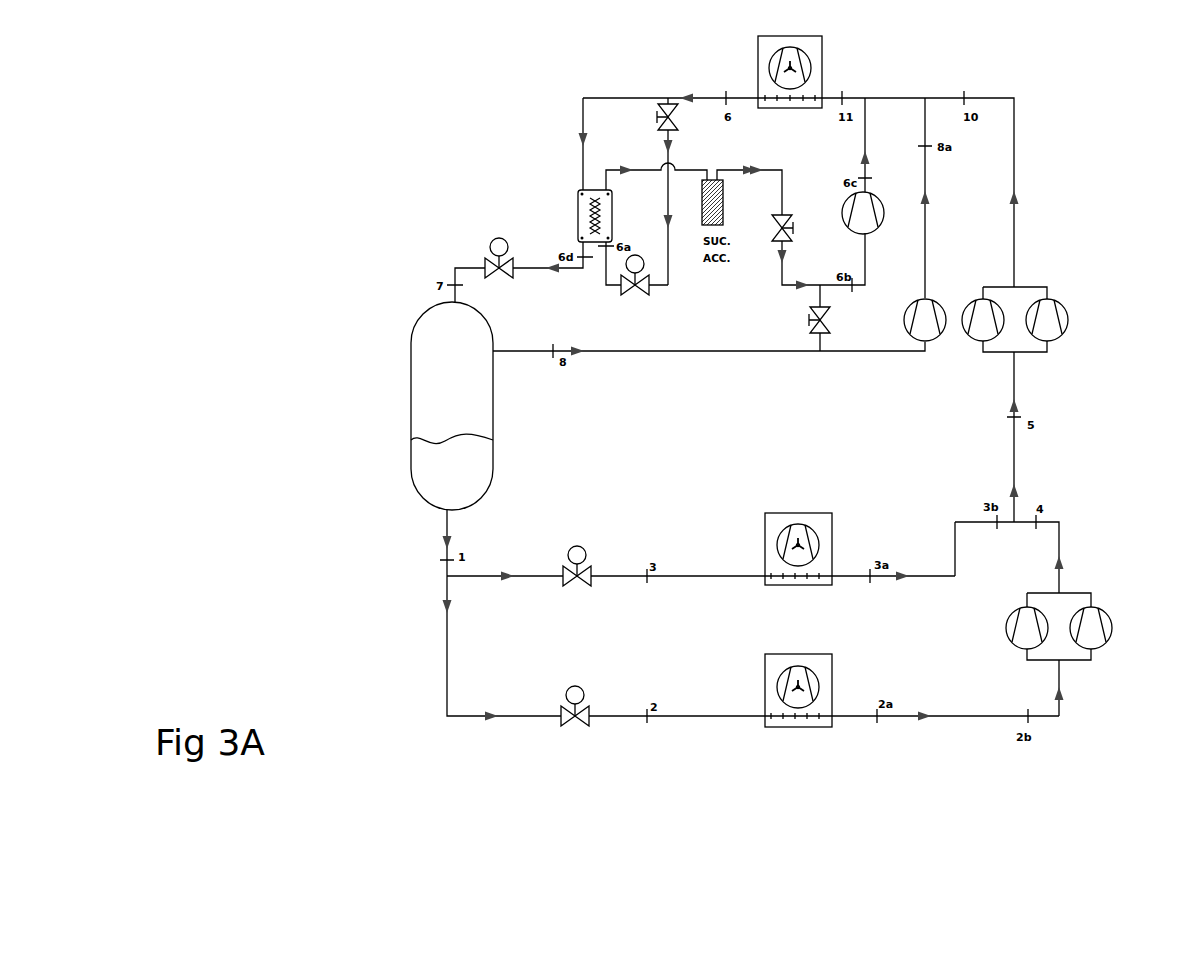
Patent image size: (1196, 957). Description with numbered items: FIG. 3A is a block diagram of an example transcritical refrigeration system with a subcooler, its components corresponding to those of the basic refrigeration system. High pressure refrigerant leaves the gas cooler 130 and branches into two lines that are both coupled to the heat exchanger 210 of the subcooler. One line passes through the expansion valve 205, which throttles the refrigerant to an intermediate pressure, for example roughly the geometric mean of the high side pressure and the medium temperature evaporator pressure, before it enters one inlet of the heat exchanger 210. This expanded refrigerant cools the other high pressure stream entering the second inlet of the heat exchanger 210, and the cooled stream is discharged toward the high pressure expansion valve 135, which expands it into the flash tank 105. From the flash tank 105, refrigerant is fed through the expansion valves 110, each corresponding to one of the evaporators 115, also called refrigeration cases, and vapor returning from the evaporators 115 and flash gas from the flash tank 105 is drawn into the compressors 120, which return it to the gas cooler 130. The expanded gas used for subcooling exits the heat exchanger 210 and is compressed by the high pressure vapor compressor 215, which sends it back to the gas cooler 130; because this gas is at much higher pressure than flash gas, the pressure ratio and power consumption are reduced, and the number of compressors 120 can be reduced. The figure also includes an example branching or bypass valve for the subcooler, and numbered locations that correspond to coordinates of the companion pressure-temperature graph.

The flash tank 105 is at (452, 406).
The expansion valve 110 is at (608, 668).
The evaporator 115 is at (823, 650).
The compressor 120 is at (1030, 517).
The gas cooler 130 is at (841, 71).
The high pressure expansion valve 135 is at (429, 242).
The expansion valve 205 is at (647, 294).
The heat exchanger 210 is at (550, 192).
The high pressure vapor compressor 215 is at (880, 232).